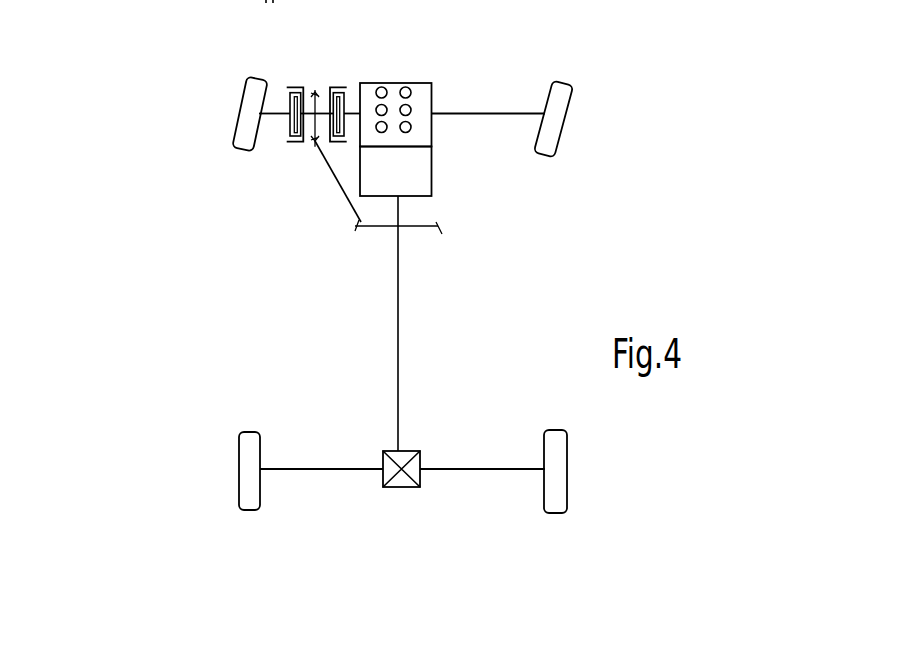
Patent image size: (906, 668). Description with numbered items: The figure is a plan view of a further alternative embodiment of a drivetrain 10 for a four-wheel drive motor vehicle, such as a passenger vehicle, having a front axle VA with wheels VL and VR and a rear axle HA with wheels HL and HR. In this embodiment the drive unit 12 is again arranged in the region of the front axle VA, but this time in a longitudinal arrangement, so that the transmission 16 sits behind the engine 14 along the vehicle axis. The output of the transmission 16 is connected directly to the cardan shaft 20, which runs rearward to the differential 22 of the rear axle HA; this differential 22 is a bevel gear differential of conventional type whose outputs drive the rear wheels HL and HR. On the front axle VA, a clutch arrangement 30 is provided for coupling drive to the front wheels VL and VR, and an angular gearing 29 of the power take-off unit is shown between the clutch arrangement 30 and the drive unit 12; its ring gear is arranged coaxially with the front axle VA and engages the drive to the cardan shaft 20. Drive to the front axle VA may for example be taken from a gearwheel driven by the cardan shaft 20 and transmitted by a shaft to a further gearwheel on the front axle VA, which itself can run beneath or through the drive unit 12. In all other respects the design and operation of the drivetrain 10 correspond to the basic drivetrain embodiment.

The drivetrain 10 is at (624, 78).
The drive unit 12 is at (393, 88).
The engine 14 is at (420, 100).
The transmission 16 is at (422, 178).
The cardan shaft 20 is at (398, 343).
The differential 22 is at (405, 480).
The angular gearing 29 is at (339, 217).
The clutch arrangement 30 is at (330, 78).
The front axle VA is at (166, 110).
The left front wheel VL is at (247, 121).
The right front wheel VR is at (555, 122).
The rear axle HA is at (188, 462).
The left rear wheel HL is at (247, 440).
The right rear wheel HR is at (557, 445).